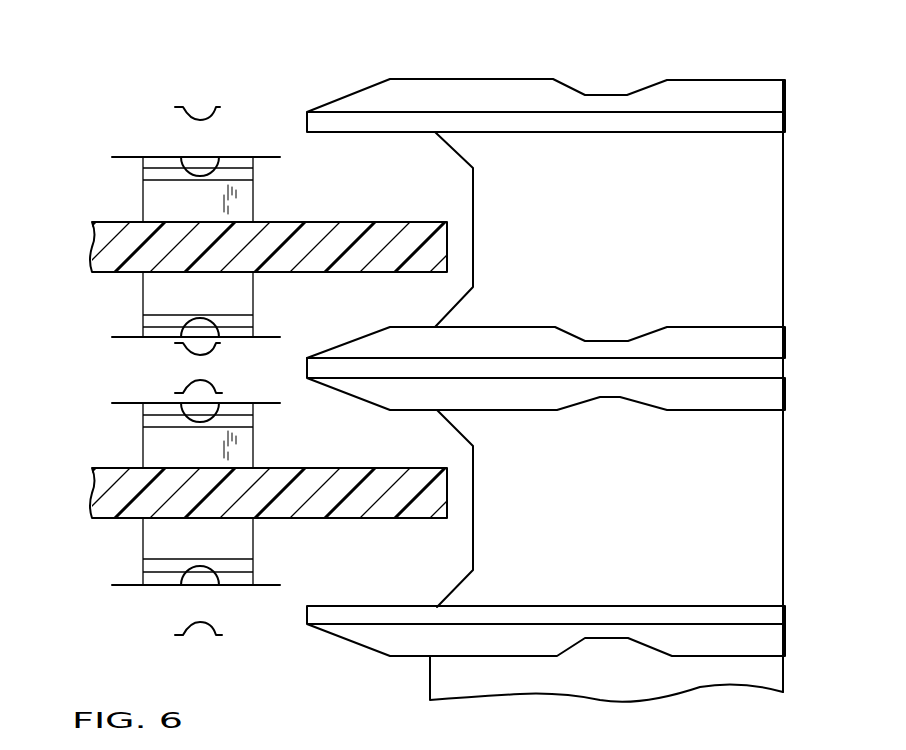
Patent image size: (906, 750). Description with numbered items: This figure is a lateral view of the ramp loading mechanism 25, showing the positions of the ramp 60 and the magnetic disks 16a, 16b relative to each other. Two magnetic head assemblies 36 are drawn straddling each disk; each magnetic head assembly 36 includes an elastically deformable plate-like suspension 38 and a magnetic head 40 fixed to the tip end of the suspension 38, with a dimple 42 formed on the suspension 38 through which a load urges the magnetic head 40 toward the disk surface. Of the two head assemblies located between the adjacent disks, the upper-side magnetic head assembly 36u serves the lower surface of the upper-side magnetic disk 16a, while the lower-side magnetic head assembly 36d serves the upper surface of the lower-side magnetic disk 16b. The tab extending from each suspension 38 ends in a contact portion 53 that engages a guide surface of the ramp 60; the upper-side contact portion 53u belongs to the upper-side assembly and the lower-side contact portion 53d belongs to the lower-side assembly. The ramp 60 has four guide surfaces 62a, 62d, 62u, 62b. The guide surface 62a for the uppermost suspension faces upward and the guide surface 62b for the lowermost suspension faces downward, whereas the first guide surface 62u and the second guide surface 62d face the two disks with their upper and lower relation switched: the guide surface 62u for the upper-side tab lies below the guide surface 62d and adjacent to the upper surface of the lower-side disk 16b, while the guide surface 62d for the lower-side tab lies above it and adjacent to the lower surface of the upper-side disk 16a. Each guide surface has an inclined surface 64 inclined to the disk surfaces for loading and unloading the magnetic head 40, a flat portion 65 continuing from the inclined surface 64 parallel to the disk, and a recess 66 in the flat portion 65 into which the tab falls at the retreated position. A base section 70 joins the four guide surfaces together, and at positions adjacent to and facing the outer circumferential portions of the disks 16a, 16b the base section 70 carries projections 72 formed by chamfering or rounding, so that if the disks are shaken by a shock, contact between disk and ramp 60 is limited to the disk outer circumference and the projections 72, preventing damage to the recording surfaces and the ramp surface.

The ramp loading mechanism 25 is at (283, 113).
The upper-side magnetic disk 16a is at (325, 222).
The lower-side magnetic disk 16b is at (385, 518).
The magnetic head assembly 36 is at (130, 178).
The upper-side magnetic head assembly 36u is at (130, 302).
The lower-side magnetic head assembly 36d is at (130, 424).
The suspension 38 is at (128, 155).
The magnetic head 40 is at (143, 197).
The dimple 42 is at (210, 157).
The contact portion 53 is at (175, 107).
The lower-side contact portion 53d is at (220, 343).
The upper-side contact portion 53u is at (175, 393).
The ramp 60 is at (786, 265).
The guide surface 62a is at (513, 78).
The second guide surface 62d is at (540, 322).
The first guide surface 62u is at (540, 412).
The guide surface 62b is at (427, 660).
The inclined surface 64 is at (340, 95).
The flat portion 65 is at (437, 78).
The recess 66 is at (610, 80).
The base section 70 is at (783, 200).
The projection 72 is at (460, 146).